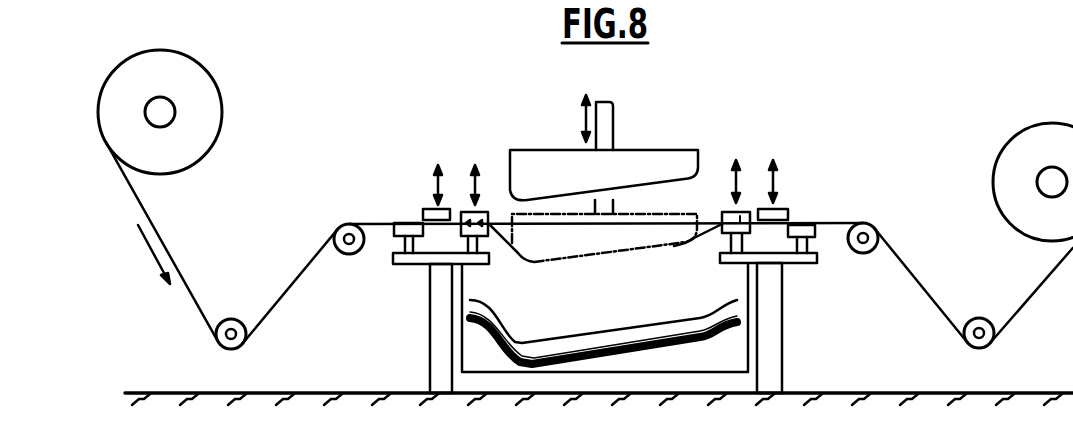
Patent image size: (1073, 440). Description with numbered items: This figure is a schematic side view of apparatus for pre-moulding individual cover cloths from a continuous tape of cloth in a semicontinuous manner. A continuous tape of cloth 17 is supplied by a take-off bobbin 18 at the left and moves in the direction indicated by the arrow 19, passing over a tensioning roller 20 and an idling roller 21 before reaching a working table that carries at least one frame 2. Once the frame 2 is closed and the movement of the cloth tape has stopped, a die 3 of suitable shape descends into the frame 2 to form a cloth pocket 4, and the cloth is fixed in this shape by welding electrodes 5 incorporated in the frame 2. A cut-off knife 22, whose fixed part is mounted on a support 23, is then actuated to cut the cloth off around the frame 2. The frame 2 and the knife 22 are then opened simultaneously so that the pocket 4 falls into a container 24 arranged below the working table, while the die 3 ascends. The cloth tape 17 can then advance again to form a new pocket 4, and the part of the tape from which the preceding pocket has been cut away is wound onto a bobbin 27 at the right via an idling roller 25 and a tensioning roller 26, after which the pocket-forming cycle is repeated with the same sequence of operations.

The frame 2 is at (747, 212).
The die 3 is at (642, 160).
The cloth pocket 4 is at (545, 340).
The welding electrodes 5 is at (729, 212).
The continuous tape of cloth 17 is at (163, 238).
The take-off bobbin 18 is at (200, 92).
The arrow 19 is at (151, 257).
The tensioning roller 20 is at (231, 319).
The idling roller 21 is at (349, 224).
The cut-off knife 22 is at (807, 225).
The support 23 is at (437, 315).
The container 24 is at (750, 349).
The idling roller 25 is at (866, 223).
The tensioning roller 26 is at (979, 318).
The bobbin 27 is at (1043, 140).